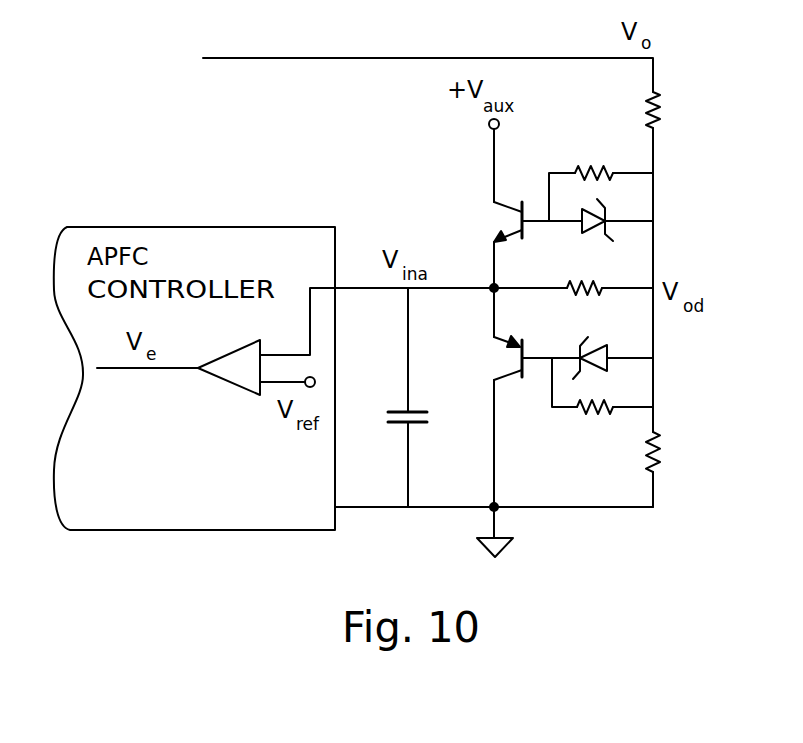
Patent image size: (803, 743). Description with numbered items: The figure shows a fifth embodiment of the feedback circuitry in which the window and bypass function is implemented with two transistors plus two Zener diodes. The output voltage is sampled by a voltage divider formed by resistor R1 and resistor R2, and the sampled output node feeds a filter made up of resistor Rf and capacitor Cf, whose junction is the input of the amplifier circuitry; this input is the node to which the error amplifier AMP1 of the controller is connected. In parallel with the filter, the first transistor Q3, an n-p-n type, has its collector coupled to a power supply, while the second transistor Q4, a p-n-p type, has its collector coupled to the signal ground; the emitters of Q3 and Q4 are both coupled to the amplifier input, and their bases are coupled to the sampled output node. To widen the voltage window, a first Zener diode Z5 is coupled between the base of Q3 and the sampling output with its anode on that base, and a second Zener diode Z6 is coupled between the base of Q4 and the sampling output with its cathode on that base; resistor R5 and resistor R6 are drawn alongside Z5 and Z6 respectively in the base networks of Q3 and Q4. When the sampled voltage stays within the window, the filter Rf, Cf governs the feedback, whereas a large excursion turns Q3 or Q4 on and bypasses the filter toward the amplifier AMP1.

The error amplifier AMP1 is at (295, 361).
The voltage divider resistor R1 is at (674, 114).
The voltage divider resistor R2 is at (674, 456).
The resistor R5 is at (601, 173).
The resistor R6 is at (602, 409).
The filter resistor Rf is at (573, 270).
The first Zener diode Z5 is at (617, 233).
The second Zener diode Z6 is at (602, 347).
The first transistor Q3 is at (515, 243).
The second transistor Q4 is at (500, 397).
The filter capacitor Cf is at (393, 397).